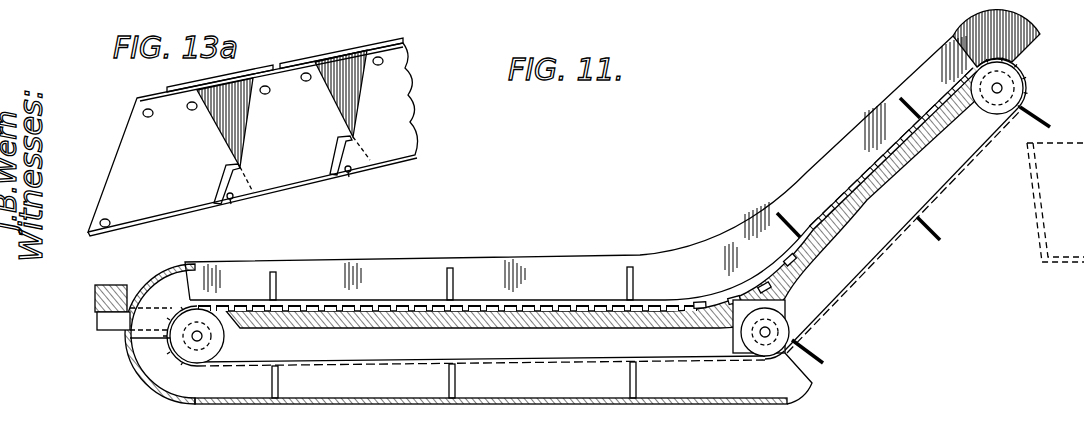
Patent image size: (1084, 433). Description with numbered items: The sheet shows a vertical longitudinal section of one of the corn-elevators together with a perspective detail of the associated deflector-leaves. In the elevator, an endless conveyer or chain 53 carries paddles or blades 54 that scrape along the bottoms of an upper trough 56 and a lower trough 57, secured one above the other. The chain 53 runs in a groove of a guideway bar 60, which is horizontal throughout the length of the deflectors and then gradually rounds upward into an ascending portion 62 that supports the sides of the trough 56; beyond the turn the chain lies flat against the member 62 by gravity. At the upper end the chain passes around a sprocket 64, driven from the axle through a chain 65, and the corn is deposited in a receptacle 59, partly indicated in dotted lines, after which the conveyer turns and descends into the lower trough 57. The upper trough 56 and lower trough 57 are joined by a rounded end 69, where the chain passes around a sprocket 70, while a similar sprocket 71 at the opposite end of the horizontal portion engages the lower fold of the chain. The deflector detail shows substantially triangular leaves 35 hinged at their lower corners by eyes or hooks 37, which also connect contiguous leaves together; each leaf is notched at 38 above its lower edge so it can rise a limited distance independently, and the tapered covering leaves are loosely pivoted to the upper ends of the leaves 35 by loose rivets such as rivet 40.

In FIG. 13a, the leaf 35 is at (124, 152).
In FIG. 13a, the eyes or hooks 37 is at (232, 200).
In FIG. 13a, the notch 38 is at (241, 167).
In FIG. 13a, the loose rivet 40 is at (190, 109).
In FIG. 11, the endless conveyer or chain 53 is at (571, 364).
In FIG. 11, the paddles or blades 54 is at (449, 385).
In FIG. 11, the upper trough 56 is at (561, 258).
In FIG. 11, the lower trough 57 is at (536, 404).
In FIG. 13a, the receptacle 59 is at (266, 92).
In FIG. 11, the receptacle 59 is at (1043, 218).
In FIG. 11, the bar 60 is at (541, 322).
In FIG. 11, the ascending portion 62 is at (828, 260).
In FIG. 11, the sprocket 64 is at (1018, 87).
In FIG. 11, the chain 65 is at (1022, 62).
In FIG. 11, the rounded end 69 is at (130, 362).
In FIG. 11, the sprocket 70 is at (222, 342).
In FIG. 11, the sprocket 71 is at (745, 326).